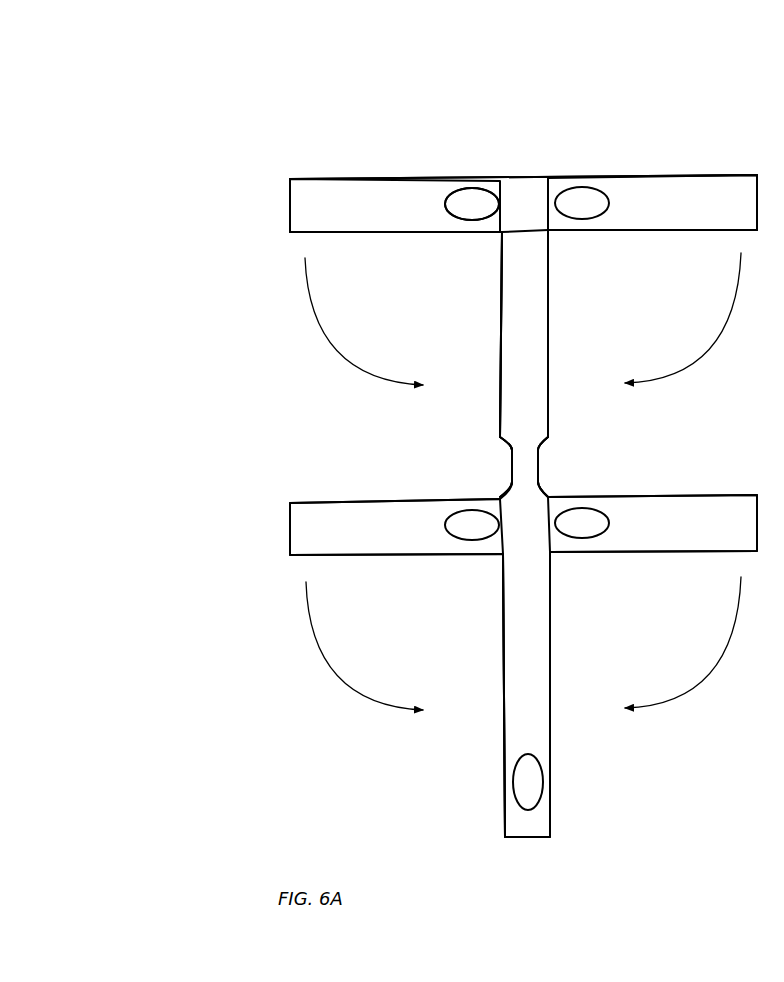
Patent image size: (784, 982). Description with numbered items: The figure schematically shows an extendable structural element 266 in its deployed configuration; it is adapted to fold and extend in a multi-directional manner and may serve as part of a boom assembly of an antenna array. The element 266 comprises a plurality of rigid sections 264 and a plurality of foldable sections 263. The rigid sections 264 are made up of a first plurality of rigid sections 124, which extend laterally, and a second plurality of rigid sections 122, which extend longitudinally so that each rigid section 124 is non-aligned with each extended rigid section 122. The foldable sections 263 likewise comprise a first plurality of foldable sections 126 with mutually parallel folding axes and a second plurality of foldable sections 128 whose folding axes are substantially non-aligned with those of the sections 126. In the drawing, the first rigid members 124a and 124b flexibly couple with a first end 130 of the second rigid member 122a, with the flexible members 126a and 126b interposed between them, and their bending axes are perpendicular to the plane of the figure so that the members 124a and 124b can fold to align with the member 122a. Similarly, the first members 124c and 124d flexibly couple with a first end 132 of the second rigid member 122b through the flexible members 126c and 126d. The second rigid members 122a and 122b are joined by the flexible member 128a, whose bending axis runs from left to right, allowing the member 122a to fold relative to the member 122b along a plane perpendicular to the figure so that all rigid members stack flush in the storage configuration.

The second plurality of rigid sections 122 is at (535, 332).
The second rigid member 122a is at (508, 388).
The second rigid member 122b is at (524, 685).
The first plurality of rigid sections 124 is at (380, 177).
The first rigid member 124a is at (305, 208).
The first rigid member 124b is at (697, 193).
The first rigid member 124c is at (308, 529).
The first rigid member 124d is at (712, 541).
The first plurality of foldable sections 126 is at (468, 193).
The flexible member 126a is at (466, 215).
The flexible member 126b is at (575, 197).
The flexible member 126c is at (470, 538).
The flexible member 126d is at (578, 532).
The second plurality of foldable sections 128 is at (525, 455).
The flexible member 128a is at (517, 452).
The first end 130 is at (508, 298).
The first end 132 is at (520, 572).
The foldable sections 263 is at (524, 122).
The rigid sections 264 is at (303, 137).
The extendable structural element 266 is at (436, 107).